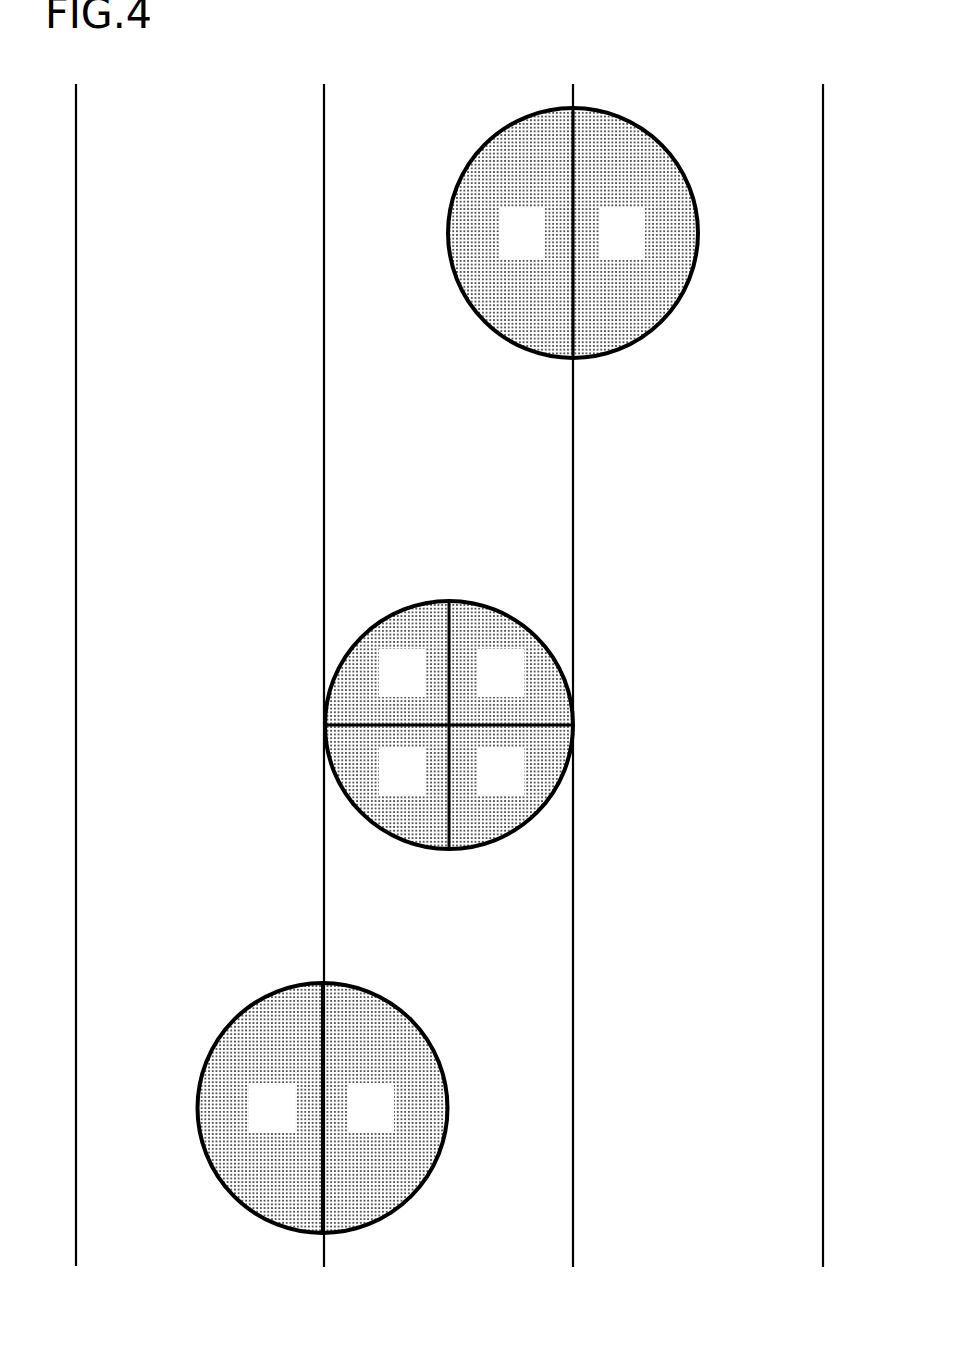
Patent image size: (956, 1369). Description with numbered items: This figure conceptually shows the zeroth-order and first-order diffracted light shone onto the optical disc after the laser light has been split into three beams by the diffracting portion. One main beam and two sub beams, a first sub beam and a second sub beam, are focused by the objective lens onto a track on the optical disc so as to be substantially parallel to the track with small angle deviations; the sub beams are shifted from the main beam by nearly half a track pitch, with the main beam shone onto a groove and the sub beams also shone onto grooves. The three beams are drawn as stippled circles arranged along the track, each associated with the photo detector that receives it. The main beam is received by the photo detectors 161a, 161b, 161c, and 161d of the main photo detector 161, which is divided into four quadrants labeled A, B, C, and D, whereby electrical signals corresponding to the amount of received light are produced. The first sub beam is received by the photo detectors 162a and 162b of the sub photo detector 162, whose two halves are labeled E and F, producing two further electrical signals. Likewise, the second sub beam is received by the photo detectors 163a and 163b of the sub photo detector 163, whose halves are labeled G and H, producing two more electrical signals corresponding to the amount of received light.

The main photo detector 161 is at (520, 702).
The photo detector 161a is at (542, 760).
The photo detector 161b is at (423, 827).
The photo detector 161c is at (382, 618).
The photo detector 161d is at (497, 630).
The sub photo detector 162 is at (372, 1136).
The photo detector 162a is at (283, 1203).
The photo detector 162b is at (353, 1218).
The sub photo detector 163 is at (628, 269).
The photo detector 163a is at (528, 330).
The photo detector 163b is at (612, 343).